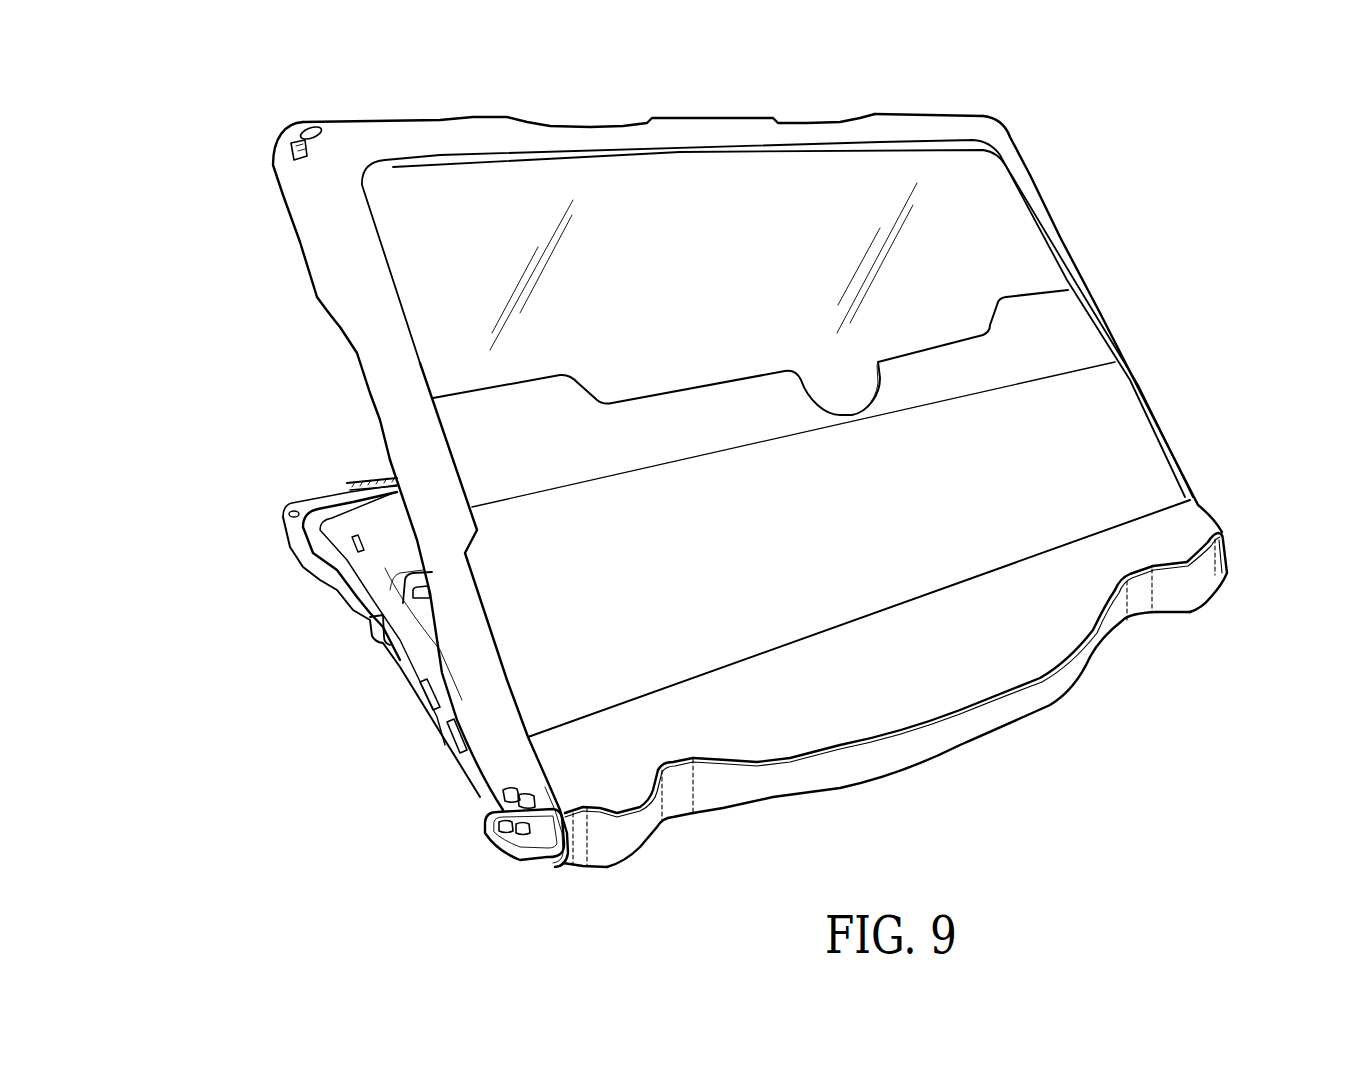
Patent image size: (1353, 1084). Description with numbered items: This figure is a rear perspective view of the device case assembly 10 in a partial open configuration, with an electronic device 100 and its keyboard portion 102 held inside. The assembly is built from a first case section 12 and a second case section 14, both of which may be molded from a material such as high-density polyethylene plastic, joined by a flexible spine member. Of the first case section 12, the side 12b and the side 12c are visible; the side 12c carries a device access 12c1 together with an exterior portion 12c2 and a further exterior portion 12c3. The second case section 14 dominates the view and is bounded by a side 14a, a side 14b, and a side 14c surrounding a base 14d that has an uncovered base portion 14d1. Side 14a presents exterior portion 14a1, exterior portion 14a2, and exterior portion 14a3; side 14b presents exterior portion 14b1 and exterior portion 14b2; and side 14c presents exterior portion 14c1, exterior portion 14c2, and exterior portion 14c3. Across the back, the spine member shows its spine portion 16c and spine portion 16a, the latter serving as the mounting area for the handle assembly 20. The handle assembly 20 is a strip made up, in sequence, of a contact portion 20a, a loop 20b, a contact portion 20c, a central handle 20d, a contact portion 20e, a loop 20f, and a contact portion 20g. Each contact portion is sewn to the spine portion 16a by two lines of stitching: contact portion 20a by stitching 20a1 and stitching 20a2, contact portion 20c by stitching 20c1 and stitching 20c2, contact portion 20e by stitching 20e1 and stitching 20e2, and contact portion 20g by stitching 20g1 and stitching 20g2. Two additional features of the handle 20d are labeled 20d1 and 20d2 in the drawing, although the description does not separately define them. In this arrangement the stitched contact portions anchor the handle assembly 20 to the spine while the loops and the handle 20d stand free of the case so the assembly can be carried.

The device case assembly 10 is at (1218, 216).
The first case section 12 is at (185, 445).
The side 12b is at (345, 450).
The side 12c is at (298, 725).
The device access 12c1 is at (377, 630).
The exterior portion 12c2 is at (310, 578).
The exterior portion 12c3 is at (285, 512).
The second case section 14 is at (140, 180).
The side 14a is at (1070, 188).
The exterior portion 14a1 is at (1172, 440).
The exterior portion 14a2 is at (1027, 165).
The exterior portion 14a3 is at (993, 120).
The side 14b is at (668, 85).
The exterior portion 14b1 is at (932, 123).
The exterior portion 14b2 is at (397, 125).
The side 14c is at (232, 248).
The exterior portion 14c1 is at (468, 705).
The exterior portion 14c2 is at (295, 192).
The exterior portion 14c3 is at (288, 137).
The base 14d is at (698, 234).
The uncovered base portion 14d1 is at (804, 284).
The spine portion 16a is at (922, 669).
The spine portion 16c is at (884, 532).
The handle assembly 20 is at (1247, 698).
The contact portion 20a is at (1223, 575).
The stitching 20a1 is at (1217, 585).
The stitching 20a2 is at (1223, 560).
The loop 20b is at (1193, 595).
The contact portion 20c is at (1140, 598).
The stitching 20c1 is at (1128, 613).
The stitching 20c2 is at (1153, 587).
The handle 20d is at (993, 777).
The upper edge of central segment 20d1 is at (713, 783).
The lower edge of central segment 20d2 is at (1020, 713).
The contact portion 20e is at (688, 795).
The stitching 20e1 is at (678, 797).
The stitching 20e2 is at (693, 787).
The loop 20f is at (630, 840).
The contact portion 20g is at (573, 845).
The stitching 20g1 is at (575, 862).
The stitching 20g2 is at (587, 842).
The electronic device 100 is at (362, 516).
The keyboard portion 102 is at (347, 530).